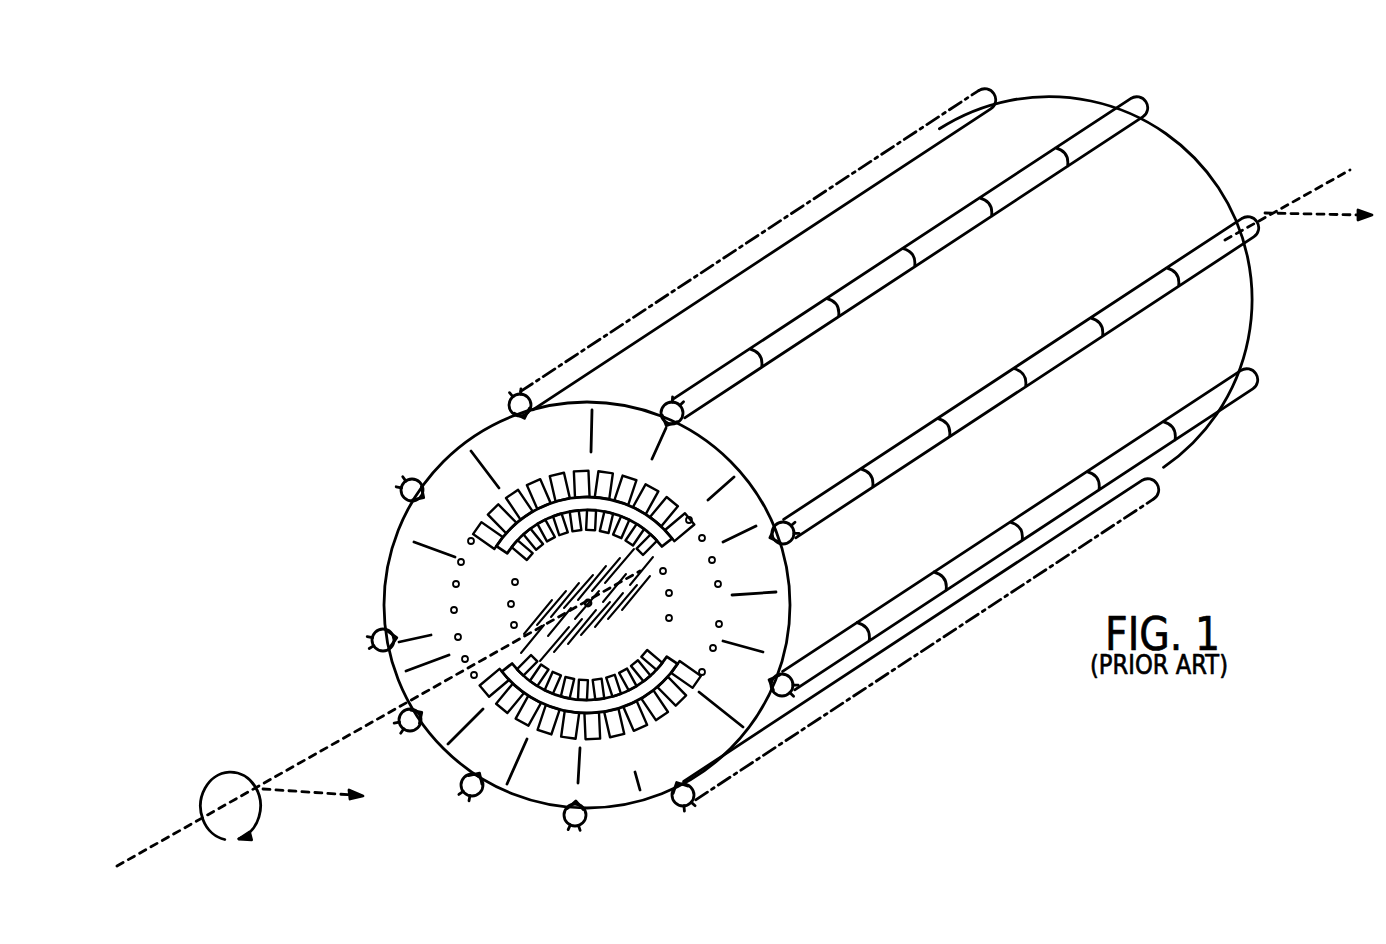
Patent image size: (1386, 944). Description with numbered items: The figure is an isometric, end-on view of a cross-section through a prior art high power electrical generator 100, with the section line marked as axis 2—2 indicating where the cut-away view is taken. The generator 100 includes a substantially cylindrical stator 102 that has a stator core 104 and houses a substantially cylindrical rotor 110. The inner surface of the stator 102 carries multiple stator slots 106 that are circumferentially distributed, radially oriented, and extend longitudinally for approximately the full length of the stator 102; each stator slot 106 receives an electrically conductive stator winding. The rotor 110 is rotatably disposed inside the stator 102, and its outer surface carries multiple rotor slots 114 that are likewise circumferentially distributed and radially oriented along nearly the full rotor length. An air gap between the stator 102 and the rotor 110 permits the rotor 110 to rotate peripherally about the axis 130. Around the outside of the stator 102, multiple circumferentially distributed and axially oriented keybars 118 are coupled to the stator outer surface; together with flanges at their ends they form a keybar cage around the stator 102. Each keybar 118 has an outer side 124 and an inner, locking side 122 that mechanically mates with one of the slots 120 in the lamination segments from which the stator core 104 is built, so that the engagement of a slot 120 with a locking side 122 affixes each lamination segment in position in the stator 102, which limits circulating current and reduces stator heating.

The electrical generator 100 is at (1088, 723).
The stator 102 is at (387, 549).
The stator core 104 is at (494, 445).
The stator slots 106 is at (523, 480).
The rotor 110 is at (537, 607).
The rotor slots 114 is at (672, 633).
The keybars 118 is at (400, 492).
The slots 120 is at (423, 499).
The locking side 122 is at (417, 480).
The outer side 124 is at (403, 484).
The axis 130 is at (193, 818).
The axis 2— 2 is at (744, 518).